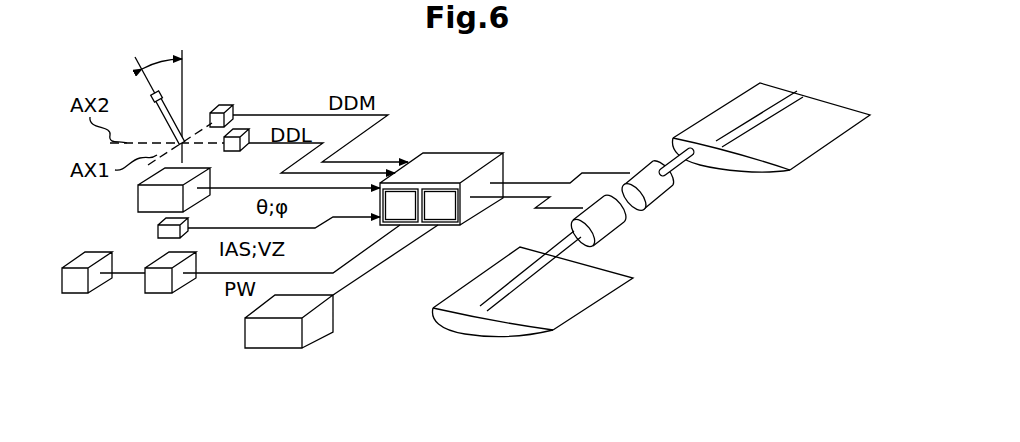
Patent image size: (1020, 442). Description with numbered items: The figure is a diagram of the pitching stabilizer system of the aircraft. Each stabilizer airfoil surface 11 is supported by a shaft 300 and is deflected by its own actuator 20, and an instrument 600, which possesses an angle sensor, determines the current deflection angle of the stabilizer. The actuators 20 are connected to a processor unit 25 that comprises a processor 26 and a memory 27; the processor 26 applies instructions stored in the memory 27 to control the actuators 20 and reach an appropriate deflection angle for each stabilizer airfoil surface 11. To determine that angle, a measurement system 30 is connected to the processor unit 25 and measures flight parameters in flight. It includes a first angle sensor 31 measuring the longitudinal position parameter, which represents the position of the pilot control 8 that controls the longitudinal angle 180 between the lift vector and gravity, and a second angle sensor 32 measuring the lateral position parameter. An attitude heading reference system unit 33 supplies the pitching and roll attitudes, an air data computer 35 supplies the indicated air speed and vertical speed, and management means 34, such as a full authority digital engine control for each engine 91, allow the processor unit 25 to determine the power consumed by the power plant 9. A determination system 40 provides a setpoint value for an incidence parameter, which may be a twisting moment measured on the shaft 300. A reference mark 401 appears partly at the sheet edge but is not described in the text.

The longitudinal angle 180 is at (160, 62).
The pilot control 8 is at (153, 104).
The first angle sensor 31 is at (229, 105).
The second angle sensor 32 is at (243, 130).
The attitude heading reference system unit 33 is at (138, 190).
The air data computer 35 is at (158, 229).
The engine 91 is at (102, 288).
The power plant 9 is at (62, 300).
The management means 34 is at (187, 288).
The measurement system 30 is at (150, 300).
The determination system 40 is at (260, 357).
The processor unit 25 is at (443, 159).
The processor 26 is at (400, 205).
The memory 27 is at (440, 205).
The instrument 600 is at (570, 229).
The actuator 20 is at (648, 190).
The shaft 300 is at (683, 174).
The stabilizer airfoil surface 11 is at (820, 153).
The reference mark 401 is at (476, 438).